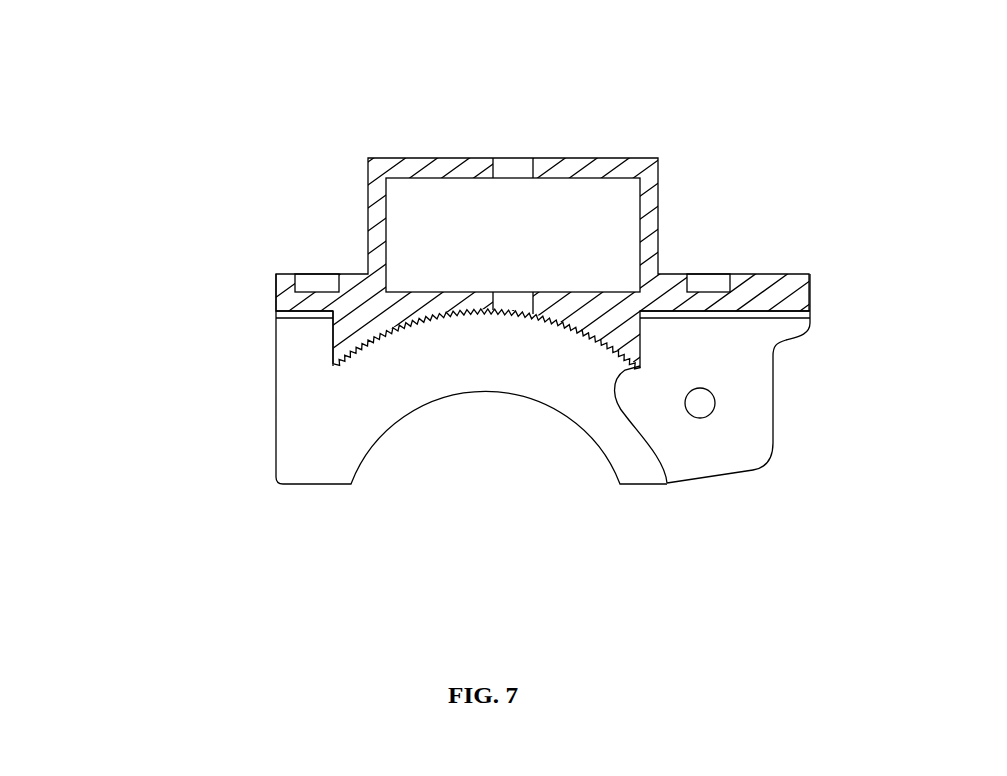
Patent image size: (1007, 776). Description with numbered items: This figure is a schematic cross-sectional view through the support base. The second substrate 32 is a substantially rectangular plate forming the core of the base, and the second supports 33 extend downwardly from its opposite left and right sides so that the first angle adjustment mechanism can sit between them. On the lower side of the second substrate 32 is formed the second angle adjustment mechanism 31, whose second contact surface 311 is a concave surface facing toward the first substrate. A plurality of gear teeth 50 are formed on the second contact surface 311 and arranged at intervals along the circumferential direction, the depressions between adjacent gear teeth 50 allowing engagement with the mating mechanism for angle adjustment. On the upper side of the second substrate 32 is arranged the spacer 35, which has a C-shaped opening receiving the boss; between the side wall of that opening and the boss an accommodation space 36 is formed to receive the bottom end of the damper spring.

The second angle adjustment mechanism 31 is at (360, 316).
The second contact surface 311 is at (668, 483).
The second substrate 32 is at (808, 312).
The second support 33 is at (308, 423).
The spacer 35 is at (283, 278).
The accommodation space 36 is at (715, 283).
The gear teeth 50 is at (548, 335).